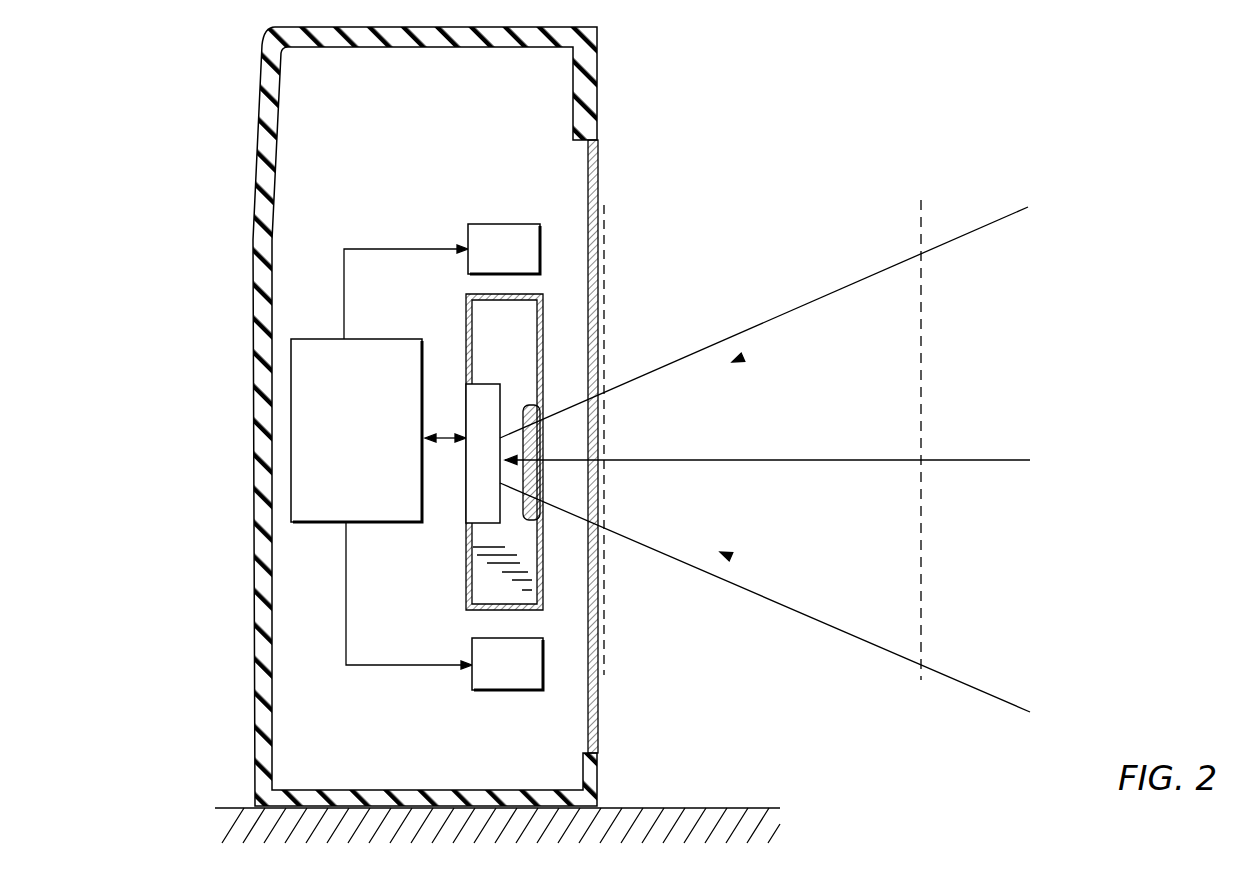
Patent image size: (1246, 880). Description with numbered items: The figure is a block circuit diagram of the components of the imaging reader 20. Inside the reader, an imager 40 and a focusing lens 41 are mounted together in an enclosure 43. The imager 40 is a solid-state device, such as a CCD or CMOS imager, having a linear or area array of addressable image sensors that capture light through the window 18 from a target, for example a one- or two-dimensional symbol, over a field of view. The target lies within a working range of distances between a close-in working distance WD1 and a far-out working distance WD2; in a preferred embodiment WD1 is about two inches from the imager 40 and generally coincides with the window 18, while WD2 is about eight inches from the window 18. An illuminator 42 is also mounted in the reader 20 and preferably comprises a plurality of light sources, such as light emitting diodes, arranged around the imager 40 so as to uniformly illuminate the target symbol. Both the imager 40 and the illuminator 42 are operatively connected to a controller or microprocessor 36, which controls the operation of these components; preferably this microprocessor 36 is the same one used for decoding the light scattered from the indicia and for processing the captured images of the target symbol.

The imaging reader 20 is at (603, 27).
The window 18 is at (600, 200).
The microprocessor 36 is at (327, 522).
The imager 40 is at (467, 385).
The focusing lens 41 is at (540, 513).
The illuminator 42 is at (507, 223).
The enclosure 43 is at (523, 294).
The close-in working distance WD1 is at (612, 640).
The far-out working distance WD2 is at (955, 168).